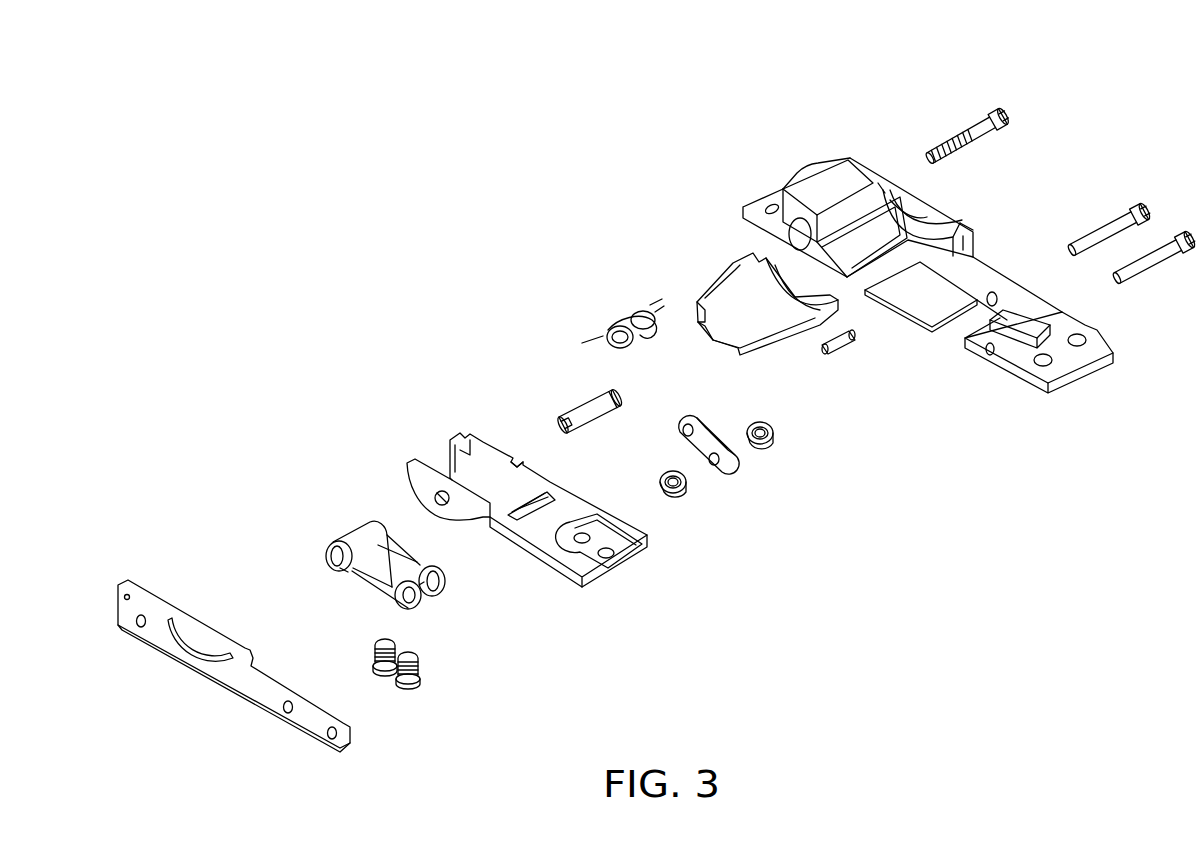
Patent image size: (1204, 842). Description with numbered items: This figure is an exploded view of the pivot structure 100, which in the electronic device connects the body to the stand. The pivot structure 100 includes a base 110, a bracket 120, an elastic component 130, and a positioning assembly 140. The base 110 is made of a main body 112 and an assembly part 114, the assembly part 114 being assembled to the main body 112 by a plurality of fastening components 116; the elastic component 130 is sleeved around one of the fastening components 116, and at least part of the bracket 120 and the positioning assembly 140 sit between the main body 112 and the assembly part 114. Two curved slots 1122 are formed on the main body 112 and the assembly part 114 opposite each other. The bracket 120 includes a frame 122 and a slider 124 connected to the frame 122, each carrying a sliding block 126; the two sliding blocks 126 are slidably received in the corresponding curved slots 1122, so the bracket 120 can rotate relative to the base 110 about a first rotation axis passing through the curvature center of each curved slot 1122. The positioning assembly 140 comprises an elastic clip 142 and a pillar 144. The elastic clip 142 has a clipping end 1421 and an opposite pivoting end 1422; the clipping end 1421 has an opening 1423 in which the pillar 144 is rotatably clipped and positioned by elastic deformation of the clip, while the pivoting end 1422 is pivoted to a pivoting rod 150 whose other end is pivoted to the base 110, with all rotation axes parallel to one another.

The pivot structure 100 is at (1200, 728).
The base 110 is at (498, 256).
The main body 112 is at (758, 205).
The assembly part 114 is at (143, 604).
The curved slots 1122 is at (887, 190).
The fastening components 116 is at (990, 132).
The bracket 120 is at (768, 606).
The frame 122 is at (585, 560).
The slider 124 is at (753, 323).
The sliding blocks 126 is at (701, 328).
The elastic component 130 is at (624, 318).
The positioning assembly 140 is at (432, 386).
The elastic clip 142 is at (397, 568).
The clipping end 1421 is at (326, 548).
The pivoting end 1422 is at (446, 596).
The opening 1423 is at (340, 569).
The pillar 144 is at (585, 413).
The pivoting rod 150 is at (730, 460).